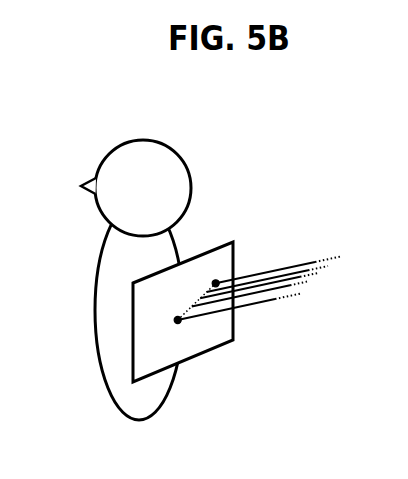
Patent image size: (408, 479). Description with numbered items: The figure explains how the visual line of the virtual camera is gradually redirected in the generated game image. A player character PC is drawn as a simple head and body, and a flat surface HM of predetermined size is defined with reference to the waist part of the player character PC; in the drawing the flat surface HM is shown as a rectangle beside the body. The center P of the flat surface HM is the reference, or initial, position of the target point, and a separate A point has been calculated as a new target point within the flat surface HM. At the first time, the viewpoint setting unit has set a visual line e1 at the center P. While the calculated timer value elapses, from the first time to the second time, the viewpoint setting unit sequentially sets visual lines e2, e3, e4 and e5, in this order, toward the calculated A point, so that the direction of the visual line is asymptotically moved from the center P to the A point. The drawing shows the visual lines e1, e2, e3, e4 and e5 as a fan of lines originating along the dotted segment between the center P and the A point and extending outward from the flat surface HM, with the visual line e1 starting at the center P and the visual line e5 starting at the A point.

The player character PC is at (100, 163).
The flat surface HM is at (198, 256).
The center P is at (175, 335).
The A point A is at (218, 274).
The visual line e1 is at (277, 302).
The visual line e2 is at (307, 286).
The visual line e3 is at (318, 277).
The visual line e4 is at (328, 266).
The visual line e5 is at (315, 262).